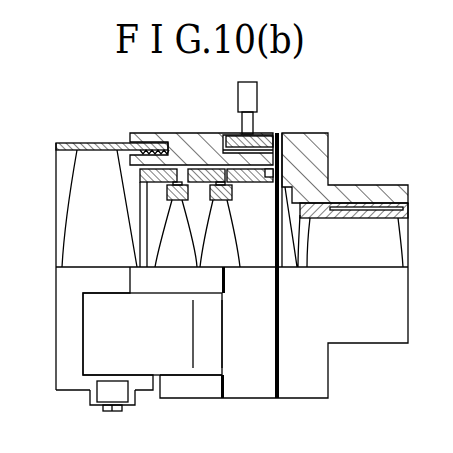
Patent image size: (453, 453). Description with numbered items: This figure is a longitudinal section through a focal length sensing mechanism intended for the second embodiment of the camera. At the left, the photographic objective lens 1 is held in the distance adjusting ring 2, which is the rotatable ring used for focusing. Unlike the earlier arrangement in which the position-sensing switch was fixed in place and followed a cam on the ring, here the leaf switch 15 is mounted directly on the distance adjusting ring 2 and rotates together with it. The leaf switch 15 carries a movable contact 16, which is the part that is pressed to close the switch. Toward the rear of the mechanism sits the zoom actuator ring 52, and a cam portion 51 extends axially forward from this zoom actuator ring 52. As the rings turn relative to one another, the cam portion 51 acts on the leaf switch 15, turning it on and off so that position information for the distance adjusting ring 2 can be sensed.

The photographic objective lens 1 is at (77, 180).
The distance adjusting ring 2 is at (73, 143).
The leaf switch 15 is at (130, 407).
The movable contact 16 is at (103, 393).
The cam portion 51 is at (88, 340).
The zoom actuator ring 52 is at (268, 133).